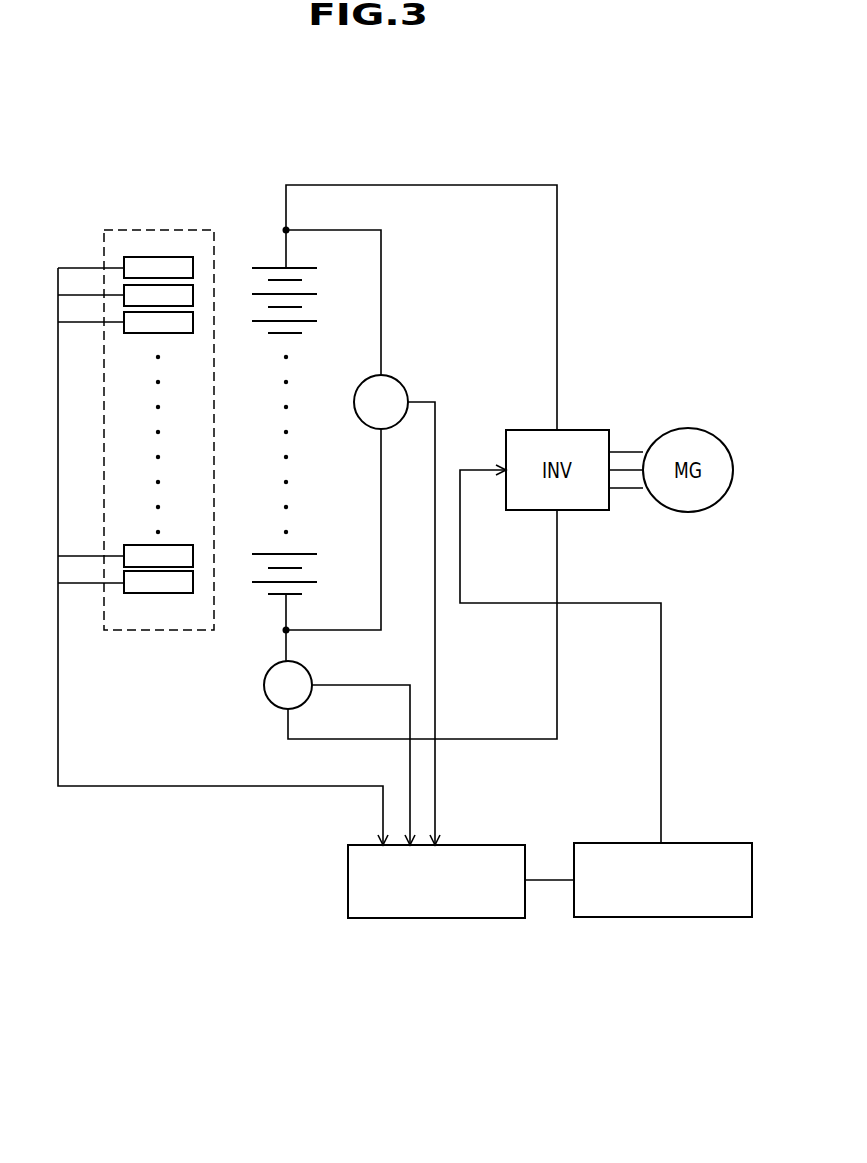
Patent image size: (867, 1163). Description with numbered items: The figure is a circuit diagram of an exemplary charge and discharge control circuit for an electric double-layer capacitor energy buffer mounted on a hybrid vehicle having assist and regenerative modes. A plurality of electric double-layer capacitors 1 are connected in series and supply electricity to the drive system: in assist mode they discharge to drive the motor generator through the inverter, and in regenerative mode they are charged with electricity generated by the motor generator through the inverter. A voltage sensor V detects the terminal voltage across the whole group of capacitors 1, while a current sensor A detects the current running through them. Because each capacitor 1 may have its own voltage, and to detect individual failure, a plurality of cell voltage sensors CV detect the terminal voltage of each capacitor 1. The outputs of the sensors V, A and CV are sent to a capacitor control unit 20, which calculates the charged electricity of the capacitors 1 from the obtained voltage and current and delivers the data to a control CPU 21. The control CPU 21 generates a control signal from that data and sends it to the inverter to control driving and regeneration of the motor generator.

The electric double-layer capacitor 1 is at (316, 267).
The capacitor control unit 20 is at (487, 918).
The control CPU 21 is at (712, 917).
The cell voltage sensor CV is at (143, 230).
The voltage sensor V is at (391, 379).
The current sensor A is at (269, 670).